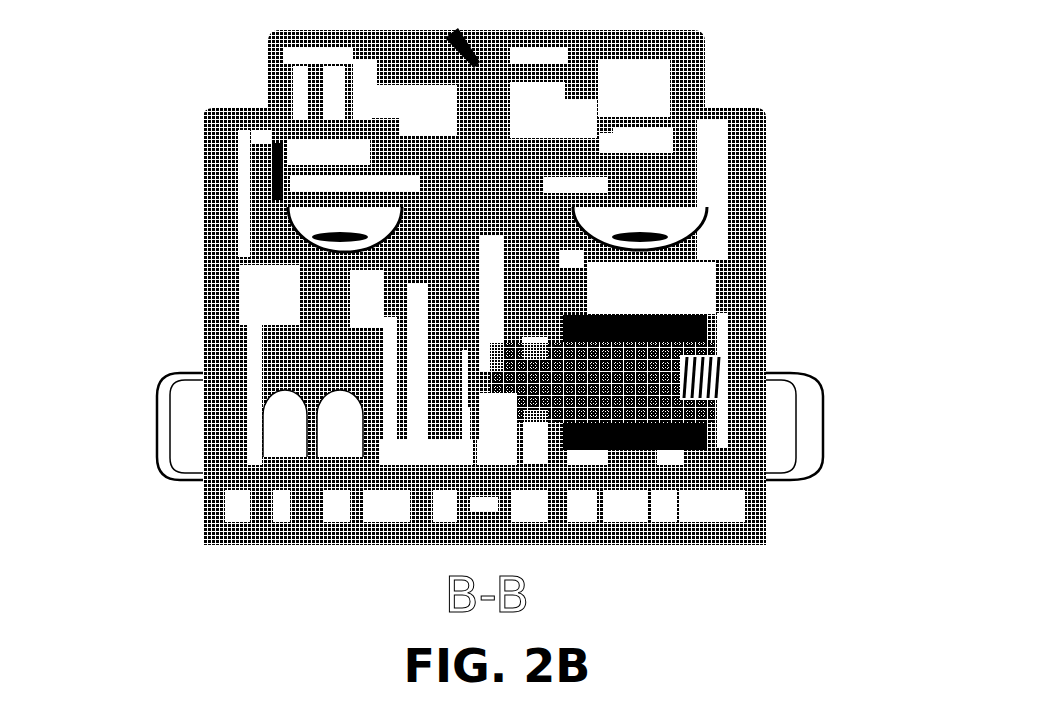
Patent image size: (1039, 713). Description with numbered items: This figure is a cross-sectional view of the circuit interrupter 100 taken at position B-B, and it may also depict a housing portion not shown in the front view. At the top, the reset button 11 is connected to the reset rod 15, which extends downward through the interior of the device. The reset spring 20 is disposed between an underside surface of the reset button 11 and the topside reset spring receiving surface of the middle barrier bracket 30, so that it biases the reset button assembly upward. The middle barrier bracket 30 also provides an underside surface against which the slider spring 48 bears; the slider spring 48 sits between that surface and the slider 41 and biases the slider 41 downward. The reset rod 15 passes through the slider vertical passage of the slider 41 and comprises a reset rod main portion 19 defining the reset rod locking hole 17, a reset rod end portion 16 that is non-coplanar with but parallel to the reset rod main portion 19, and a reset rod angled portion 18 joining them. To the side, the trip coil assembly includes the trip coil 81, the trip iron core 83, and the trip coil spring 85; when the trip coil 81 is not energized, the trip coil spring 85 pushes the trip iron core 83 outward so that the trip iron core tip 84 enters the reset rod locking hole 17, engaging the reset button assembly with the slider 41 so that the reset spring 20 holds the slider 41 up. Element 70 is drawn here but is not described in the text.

The circuit interrupter 100 is at (463, 333).
The reset button 11 is at (557, 42).
The reset spring 20 is at (445, 118).
The reset rod 15 is at (477, 175).
The slider spring 48 is at (445, 264).
The middle barrier bracket 30 is at (662, 207).
The slider 41 is at (445, 348).
The reset rod main portion 19 is at (482, 312).
The reset rod locking hole 17 is at (482, 358).
The trip iron core 83 is at (618, 390).
The trip iron core tip 84 is at (490, 397).
The reset rod angled portion 18 is at (478, 423).
The trip coil 81 is at (693, 447).
The trip coil spring 85 is at (720, 360).
The base plate 70 is at (268, 482).
The reset rod end portion 16 is at (480, 500).